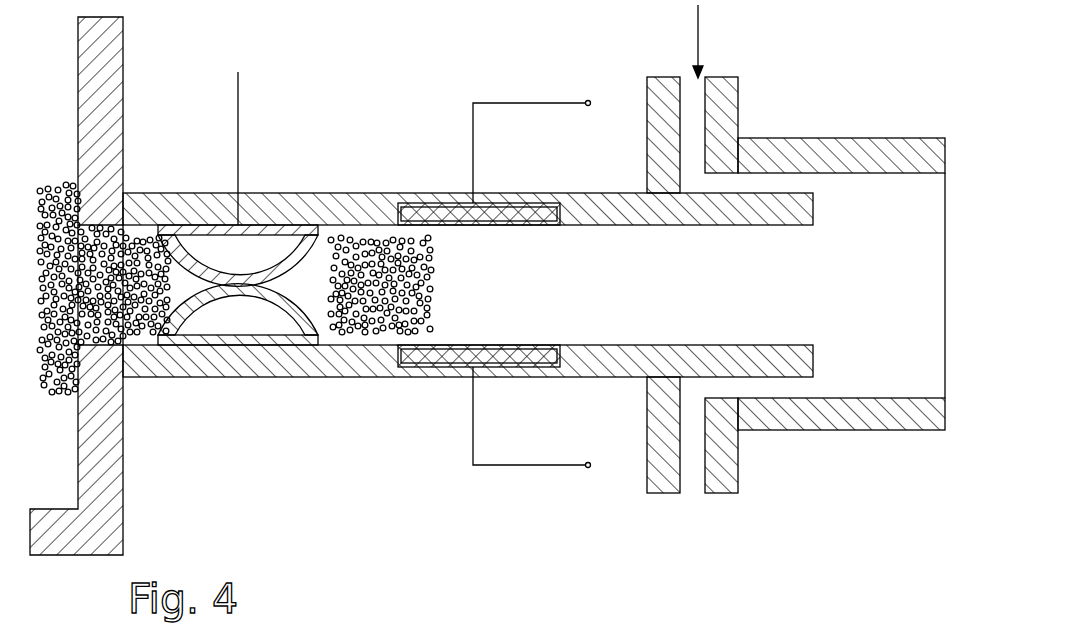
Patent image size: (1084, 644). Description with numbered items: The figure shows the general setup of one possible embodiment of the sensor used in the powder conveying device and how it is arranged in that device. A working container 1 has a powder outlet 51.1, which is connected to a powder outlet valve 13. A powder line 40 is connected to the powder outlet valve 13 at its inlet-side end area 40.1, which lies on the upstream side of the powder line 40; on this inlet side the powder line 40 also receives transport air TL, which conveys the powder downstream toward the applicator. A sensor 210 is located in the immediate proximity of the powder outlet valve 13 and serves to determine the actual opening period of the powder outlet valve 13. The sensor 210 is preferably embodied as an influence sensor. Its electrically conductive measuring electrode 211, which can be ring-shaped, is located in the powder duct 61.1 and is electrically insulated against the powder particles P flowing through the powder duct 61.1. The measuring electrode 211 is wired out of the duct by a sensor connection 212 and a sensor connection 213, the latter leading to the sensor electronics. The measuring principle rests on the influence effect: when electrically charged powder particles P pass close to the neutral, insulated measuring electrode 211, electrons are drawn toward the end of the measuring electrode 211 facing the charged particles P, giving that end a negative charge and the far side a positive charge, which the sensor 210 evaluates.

The working container 1 is at (124, 70).
The powder outlet valve 13 is at (205, 178).
The sensor 210 is at (384, 182).
The measuring electrode 211 is at (541, 195).
The sensor connection 212 is at (540, 140).
The sensor connection 213 is at (540, 432).
The powder line 40 is at (905, 138).
The inlet-side end area 40.1 is at (803, 130).
The powder outlet 51.1 is at (143, 315).
The powder duct 61.1 is at (571, 303).
The powder particles P is at (355, 348).
The transport air TL is at (711, 41).